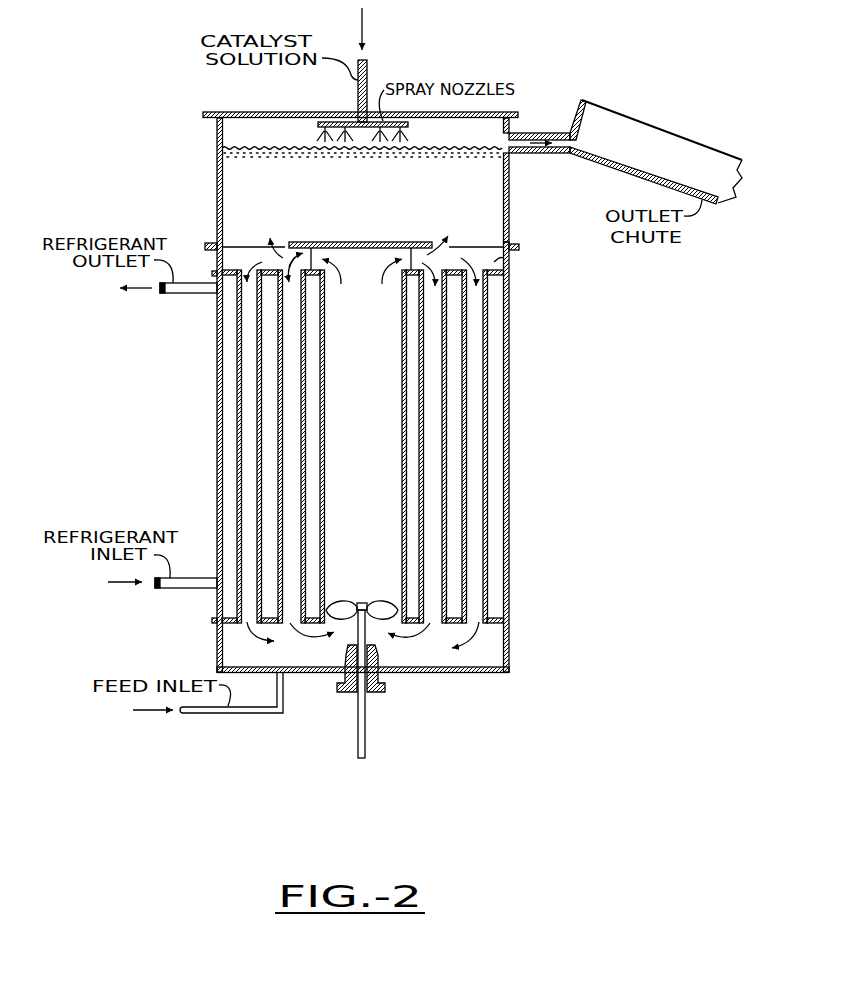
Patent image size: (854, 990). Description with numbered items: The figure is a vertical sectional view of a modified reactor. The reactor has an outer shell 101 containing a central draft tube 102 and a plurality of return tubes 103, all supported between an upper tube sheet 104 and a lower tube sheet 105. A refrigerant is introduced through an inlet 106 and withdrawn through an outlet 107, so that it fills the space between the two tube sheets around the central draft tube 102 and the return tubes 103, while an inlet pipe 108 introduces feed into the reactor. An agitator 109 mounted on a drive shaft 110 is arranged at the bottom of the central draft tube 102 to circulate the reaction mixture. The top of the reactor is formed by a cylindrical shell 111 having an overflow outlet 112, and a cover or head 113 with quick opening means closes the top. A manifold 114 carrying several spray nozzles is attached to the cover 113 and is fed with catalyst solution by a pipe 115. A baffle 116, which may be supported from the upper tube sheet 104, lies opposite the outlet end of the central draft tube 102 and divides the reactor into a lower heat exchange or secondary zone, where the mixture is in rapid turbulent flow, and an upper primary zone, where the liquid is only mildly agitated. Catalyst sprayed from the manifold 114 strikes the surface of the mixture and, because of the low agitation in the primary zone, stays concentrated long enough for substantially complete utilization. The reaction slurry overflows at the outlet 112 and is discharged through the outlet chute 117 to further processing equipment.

The outer shell 101 is at (510, 416).
The central draft tube 102 is at (326, 419).
The return tubes 103 is at (250, 378).
The upper tube sheet 104 is at (508, 266).
The lower tube sheet 105 is at (506, 624).
The inlet 106 is at (180, 589).
The outlet 107 is at (190, 294).
The inlet pipe 108 is at (260, 716).
The agitator 109 is at (337, 603).
The drive shaft 110 is at (366, 733).
The cylindrical shell 111 is at (510, 203).
The overflow outlet 112 is at (524, 133).
The cover 113 is at (213, 112).
The manifold 114 is at (346, 121).
The pipe 115 is at (368, 78).
The baffle 116 is at (354, 241).
The outlet chute 117 is at (697, 141).